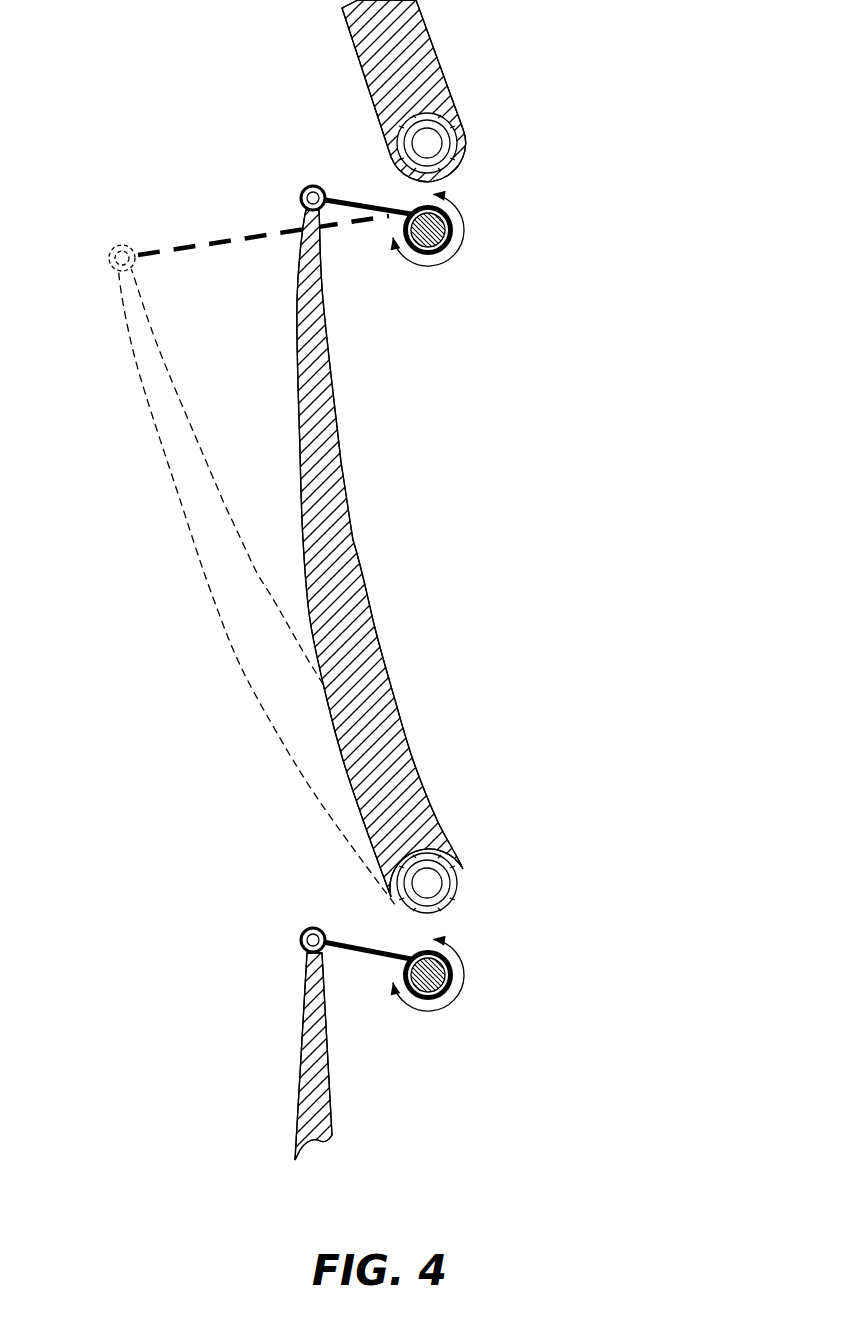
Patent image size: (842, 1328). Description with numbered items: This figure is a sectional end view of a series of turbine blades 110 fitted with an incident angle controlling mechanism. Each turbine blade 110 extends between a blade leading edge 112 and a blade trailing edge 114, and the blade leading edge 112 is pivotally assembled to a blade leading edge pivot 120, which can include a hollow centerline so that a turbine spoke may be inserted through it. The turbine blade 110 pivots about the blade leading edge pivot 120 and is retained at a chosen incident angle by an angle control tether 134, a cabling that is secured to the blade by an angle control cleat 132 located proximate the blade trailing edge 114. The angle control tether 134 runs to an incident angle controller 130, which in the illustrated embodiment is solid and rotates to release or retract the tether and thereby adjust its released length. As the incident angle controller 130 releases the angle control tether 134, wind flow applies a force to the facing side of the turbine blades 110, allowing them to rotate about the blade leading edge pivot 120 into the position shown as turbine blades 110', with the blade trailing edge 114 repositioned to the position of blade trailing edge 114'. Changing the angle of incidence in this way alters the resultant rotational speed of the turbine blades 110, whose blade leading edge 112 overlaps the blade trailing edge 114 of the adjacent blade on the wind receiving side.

The turbine blades 110 is at (414, 580).
The turbine blades position 110' is at (281, 581).
The blade leading edge 112 is at (470, 175).
The blade trailing edge 114 is at (254, 561).
The blade trailing edge position 114' is at (92, 206).
The blade leading edge pivot 120 is at (462, 128).
The incident angle controller 130 is at (452, 248).
The angle control cleat 132 is at (303, 190).
The angle control tether 134 is at (349, 200).